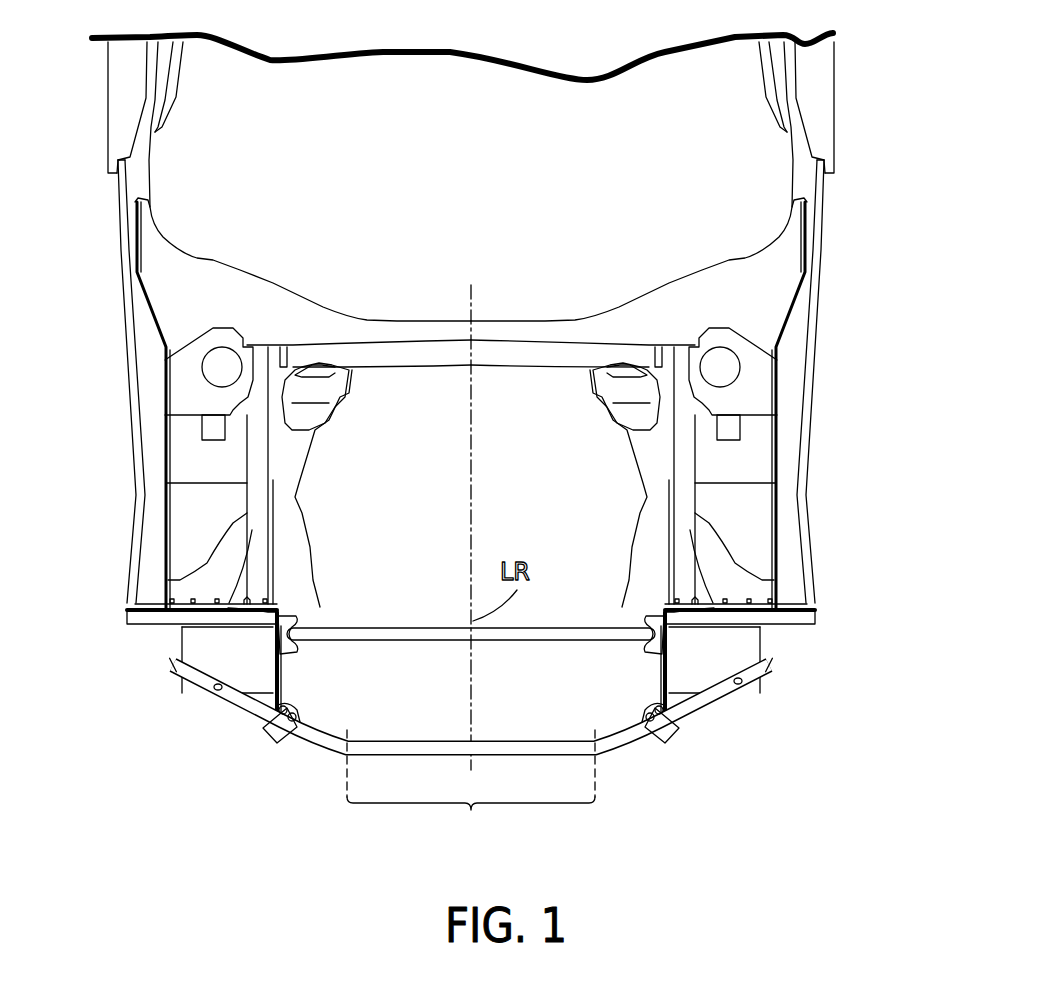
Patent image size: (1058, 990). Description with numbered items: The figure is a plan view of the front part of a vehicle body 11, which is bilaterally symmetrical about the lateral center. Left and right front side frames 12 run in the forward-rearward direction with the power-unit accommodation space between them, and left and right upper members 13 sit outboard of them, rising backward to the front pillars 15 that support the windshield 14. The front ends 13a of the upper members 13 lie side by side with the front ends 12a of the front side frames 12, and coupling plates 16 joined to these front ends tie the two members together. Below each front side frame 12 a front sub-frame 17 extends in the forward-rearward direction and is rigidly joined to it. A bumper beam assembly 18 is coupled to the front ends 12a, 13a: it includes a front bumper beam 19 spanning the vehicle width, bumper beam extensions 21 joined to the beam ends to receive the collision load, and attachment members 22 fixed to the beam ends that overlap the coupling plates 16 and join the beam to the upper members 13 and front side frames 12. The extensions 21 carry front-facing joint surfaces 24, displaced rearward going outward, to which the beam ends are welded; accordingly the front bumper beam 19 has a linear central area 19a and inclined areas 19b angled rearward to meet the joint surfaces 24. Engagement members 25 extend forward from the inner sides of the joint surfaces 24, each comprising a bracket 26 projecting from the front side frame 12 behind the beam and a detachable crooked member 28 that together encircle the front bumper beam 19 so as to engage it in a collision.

The vehicle body 11 is at (841, 222).
The front side frame 12 is at (262, 570).
The front end of front side frame 12a is at (281, 622).
The upper member 13 is at (150, 462).
The front end of upper member 13a is at (124, 612).
The windshield 14 is at (763, 163).
The front pillar 15 is at (150, 127).
The coupling plate 16 is at (265, 608).
The front sub-frame 17 is at (293, 477).
The bumper beam assembly 18 is at (645, 758).
The front bumper beam 19 is at (611, 757).
The central area 19a is at (471, 788).
The inclined area 19b is at (218, 708).
The bumper beam extension 21 is at (207, 643).
The attachment member 22 is at (143, 622).
The joint surface 24 is at (223, 693).
The engagement member 25 is at (300, 717).
The bracket 26 is at (280, 680).
The crooked member 28 is at (277, 740).